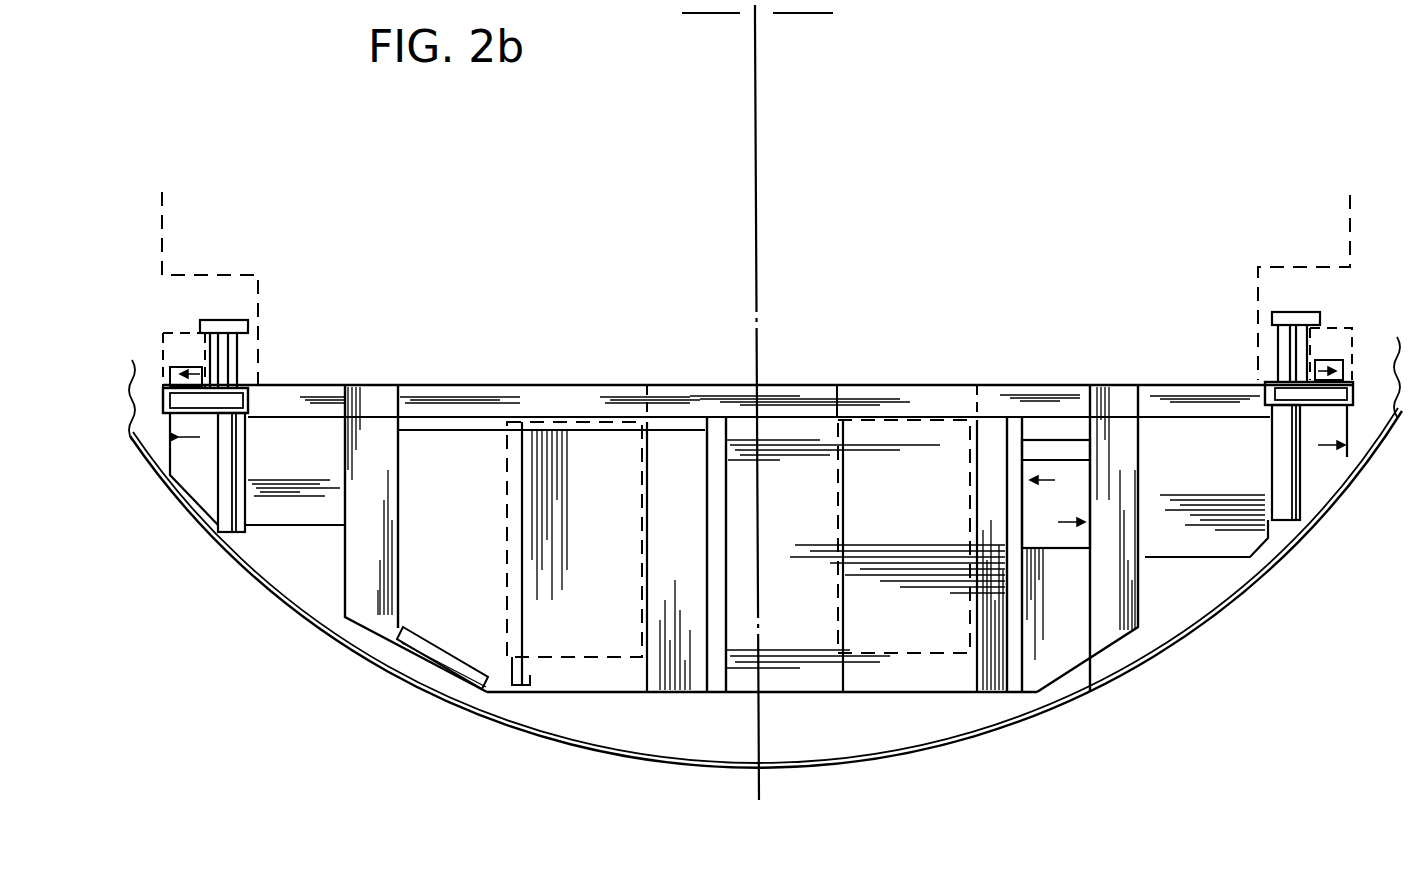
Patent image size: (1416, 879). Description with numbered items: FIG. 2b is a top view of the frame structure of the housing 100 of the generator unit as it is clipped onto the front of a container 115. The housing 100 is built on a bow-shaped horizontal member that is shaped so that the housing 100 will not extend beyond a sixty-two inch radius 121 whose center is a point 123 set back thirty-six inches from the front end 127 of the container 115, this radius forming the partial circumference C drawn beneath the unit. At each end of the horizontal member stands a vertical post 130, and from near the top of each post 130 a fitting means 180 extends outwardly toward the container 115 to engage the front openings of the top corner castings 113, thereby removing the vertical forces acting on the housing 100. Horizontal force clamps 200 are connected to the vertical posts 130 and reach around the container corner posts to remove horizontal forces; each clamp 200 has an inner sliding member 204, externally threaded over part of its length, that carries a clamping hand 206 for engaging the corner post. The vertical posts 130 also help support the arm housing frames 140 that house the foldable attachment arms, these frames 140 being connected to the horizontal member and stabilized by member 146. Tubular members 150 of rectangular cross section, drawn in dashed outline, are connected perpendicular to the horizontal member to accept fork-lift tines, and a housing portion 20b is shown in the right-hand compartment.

The housing 100 is at (330, 717).
The corner castings 113 is at (178, 328).
The container 115 is at (332, 209).
The sixty-two inch radius 121 is at (757, 173).
The center point 123 is at (757, 16).
The front end of the container 127 is at (995, 383).
The vertical posts 130 is at (250, 406).
The arm housing frames 140 is at (367, 393).
The stabilizing member 146 is at (650, 392).
The tubular members 150 is at (585, 657).
The fitting means 180 is at (183, 417).
The horizontal force clamps 200 is at (252, 363).
The inner sliding member 204 is at (243, 347).
The clamping hand 206 is at (233, 320).
The housing 20b is at (1062, 445).
The partial circumference C is at (1058, 703).